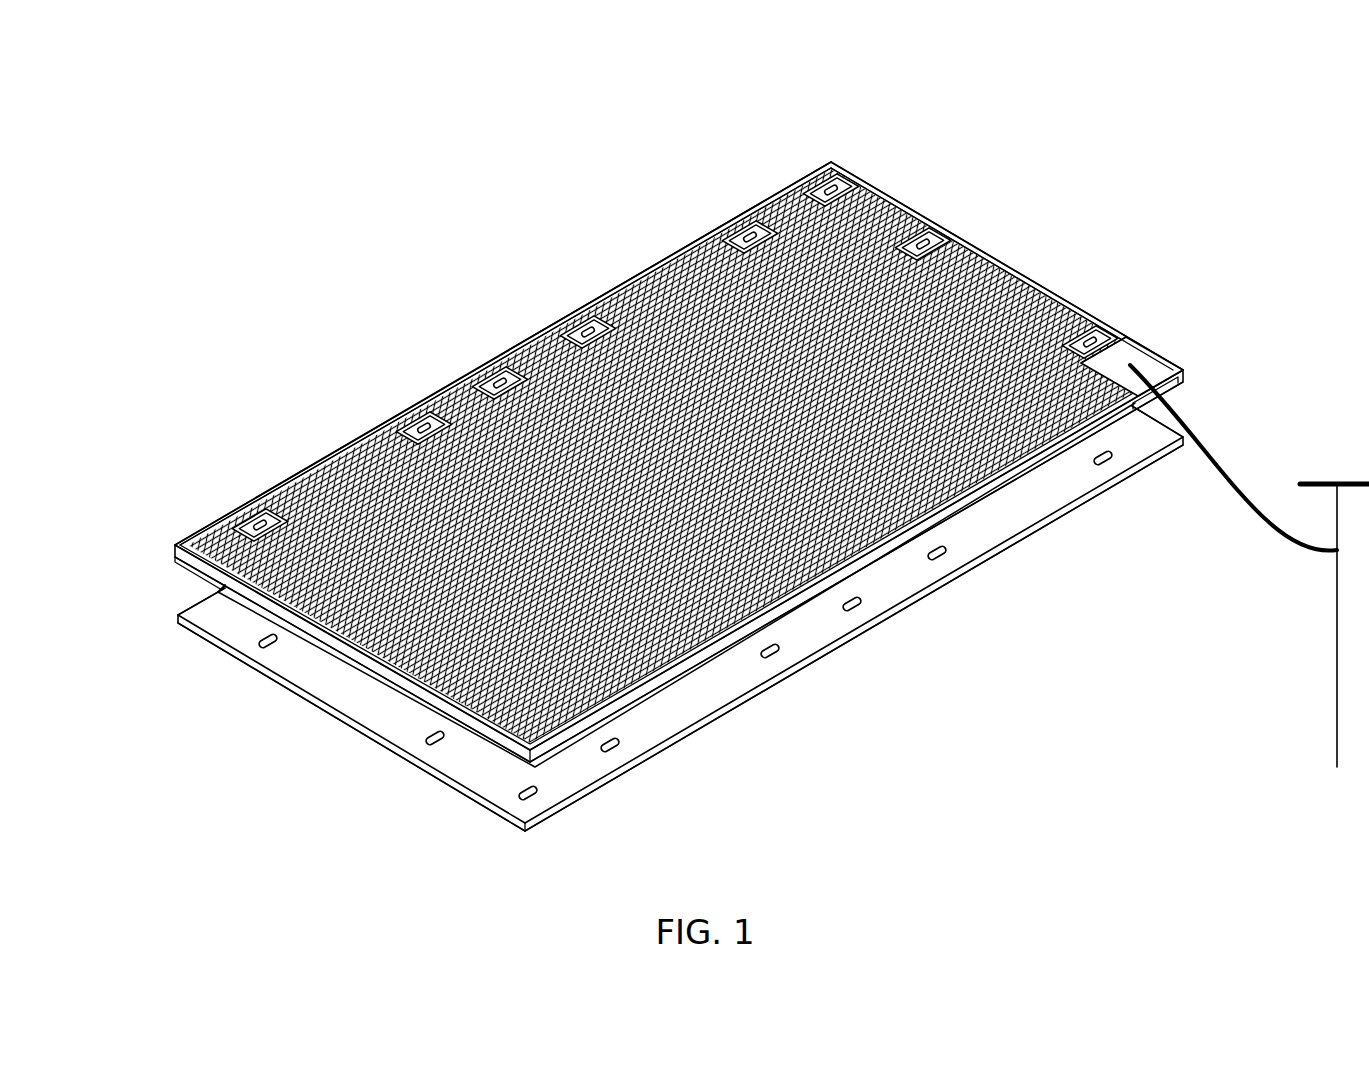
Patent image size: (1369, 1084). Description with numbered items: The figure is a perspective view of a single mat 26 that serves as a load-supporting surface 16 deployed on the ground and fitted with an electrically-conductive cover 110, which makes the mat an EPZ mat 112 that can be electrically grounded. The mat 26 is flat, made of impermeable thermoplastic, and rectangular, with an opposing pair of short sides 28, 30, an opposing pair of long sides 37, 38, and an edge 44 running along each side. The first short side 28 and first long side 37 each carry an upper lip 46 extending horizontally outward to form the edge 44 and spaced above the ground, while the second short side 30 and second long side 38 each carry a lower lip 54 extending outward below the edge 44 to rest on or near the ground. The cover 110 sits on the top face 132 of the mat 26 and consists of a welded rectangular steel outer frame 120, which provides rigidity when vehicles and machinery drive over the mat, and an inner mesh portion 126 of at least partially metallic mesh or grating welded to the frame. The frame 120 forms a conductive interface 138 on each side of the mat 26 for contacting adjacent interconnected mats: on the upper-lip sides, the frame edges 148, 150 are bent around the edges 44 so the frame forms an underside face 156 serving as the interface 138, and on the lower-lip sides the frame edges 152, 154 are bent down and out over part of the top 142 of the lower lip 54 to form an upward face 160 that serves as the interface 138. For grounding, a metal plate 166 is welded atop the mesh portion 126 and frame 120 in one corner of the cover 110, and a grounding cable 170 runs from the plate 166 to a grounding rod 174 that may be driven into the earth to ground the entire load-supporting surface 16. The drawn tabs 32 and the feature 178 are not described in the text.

The load-supporting surface 16 is at (456, 196).
The mat 26 is at (250, 355).
The first short side 28 is at (1030, 221).
The second short side 30 is at (220, 722).
The tabs 32 is at (258, 523).
The first long side 37 is at (505, 292).
The second long side 38 is at (973, 662).
The edge 44 is at (902, 188).
The upper lip 46 is at (882, 173).
The lower lip 54 is at (380, 727).
The electrically-conductive cover 110 is at (621, 272).
The EPZ mat 112 is at (350, 292).
The outer frame 120 is at (772, 195).
The inner mesh portion 126 is at (703, 235).
The top face 132 is at (623, 638).
The conductive interface 138 is at (226, 582).
The top of lower lip 142 is at (462, 767).
The frame edge 148 is at (972, 225).
The frame edge 150 is at (442, 380).
The frame edge 152 is at (297, 643).
The frame edge 154 is at (690, 688).
The underside face 156 is at (176, 556).
The upward face 160 is at (250, 602).
The metal plate 166 is at (1131, 370).
The grounding cable 170 is at (1270, 522).
The grounding rod 174 is at (1335, 665).
The connector tab 178 is at (1062, 325).